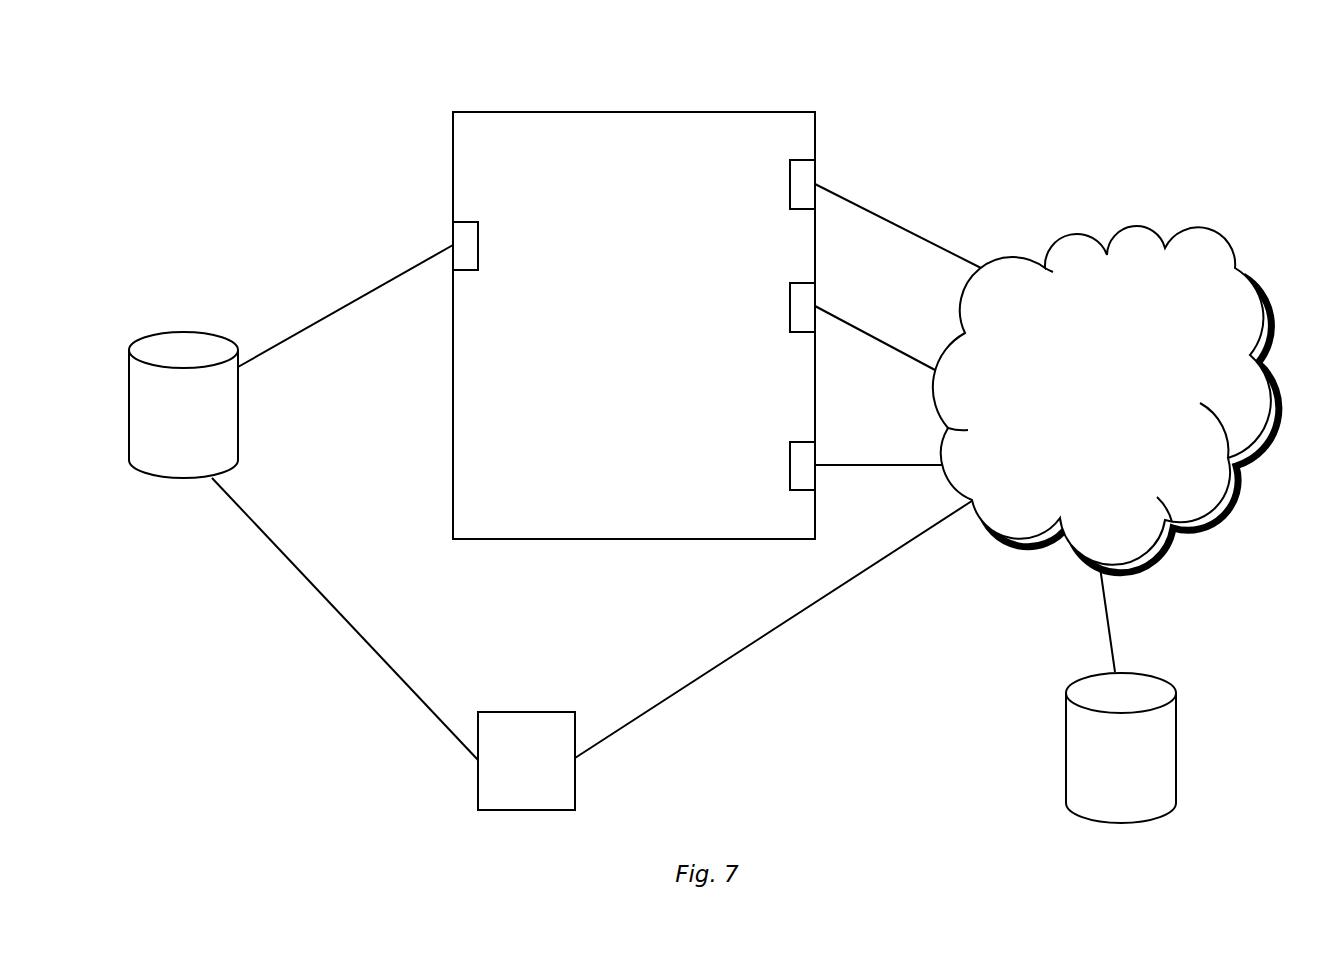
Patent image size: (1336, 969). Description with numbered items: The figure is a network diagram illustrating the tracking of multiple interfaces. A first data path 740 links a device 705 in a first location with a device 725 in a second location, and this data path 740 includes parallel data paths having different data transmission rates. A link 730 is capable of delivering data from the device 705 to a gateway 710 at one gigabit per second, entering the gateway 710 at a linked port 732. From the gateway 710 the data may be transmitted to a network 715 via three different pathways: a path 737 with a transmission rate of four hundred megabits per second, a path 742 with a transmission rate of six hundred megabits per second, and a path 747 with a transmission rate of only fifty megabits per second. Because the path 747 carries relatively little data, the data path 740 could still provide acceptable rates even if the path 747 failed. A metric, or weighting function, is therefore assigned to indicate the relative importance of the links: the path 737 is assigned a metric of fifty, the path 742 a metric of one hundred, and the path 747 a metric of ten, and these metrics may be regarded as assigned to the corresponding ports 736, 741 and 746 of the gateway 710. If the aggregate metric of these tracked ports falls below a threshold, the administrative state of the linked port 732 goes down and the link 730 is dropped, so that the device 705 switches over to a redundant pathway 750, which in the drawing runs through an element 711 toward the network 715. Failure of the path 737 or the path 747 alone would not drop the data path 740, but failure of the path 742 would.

The device 705 is at (189, 345).
The gateway 710 is at (598, 148).
The client device 711 is at (527, 737).
The network 715 is at (1188, 492).
The device 725 is at (1126, 687).
The link 730 is at (310, 330).
The linked port 732 is at (467, 233).
The port 736 is at (802, 183).
The path 737 is at (937, 250).
The first data path 740 is at (863, 182).
The port 741 is at (800, 307).
The path 742 is at (903, 348).
The port 746 is at (798, 465).
The path 747 is at (838, 465).
The redundant pathway 750 is at (790, 618).